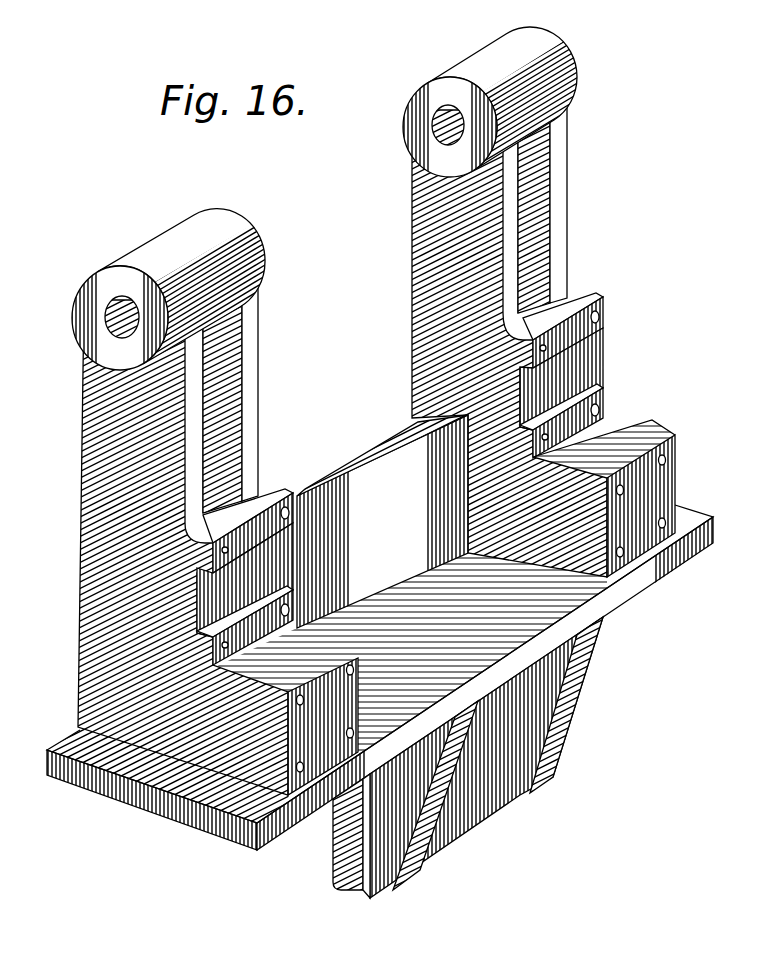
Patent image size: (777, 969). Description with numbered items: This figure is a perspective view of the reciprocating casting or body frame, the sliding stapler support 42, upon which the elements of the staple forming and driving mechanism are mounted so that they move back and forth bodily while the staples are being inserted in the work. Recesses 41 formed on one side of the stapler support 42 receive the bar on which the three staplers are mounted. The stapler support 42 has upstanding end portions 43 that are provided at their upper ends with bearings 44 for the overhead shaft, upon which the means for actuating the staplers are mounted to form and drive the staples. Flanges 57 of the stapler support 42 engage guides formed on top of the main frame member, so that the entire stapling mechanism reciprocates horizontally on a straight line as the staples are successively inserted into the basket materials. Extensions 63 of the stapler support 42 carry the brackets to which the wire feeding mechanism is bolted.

The recesses 41 is at (220, 583).
The stapler support 42 is at (388, 484).
The upstanding end portions 43 is at (253, 369).
The bearings 44 is at (378, 484).
The flanges 57 is at (167, 780).
The extensions 63 is at (318, 813).